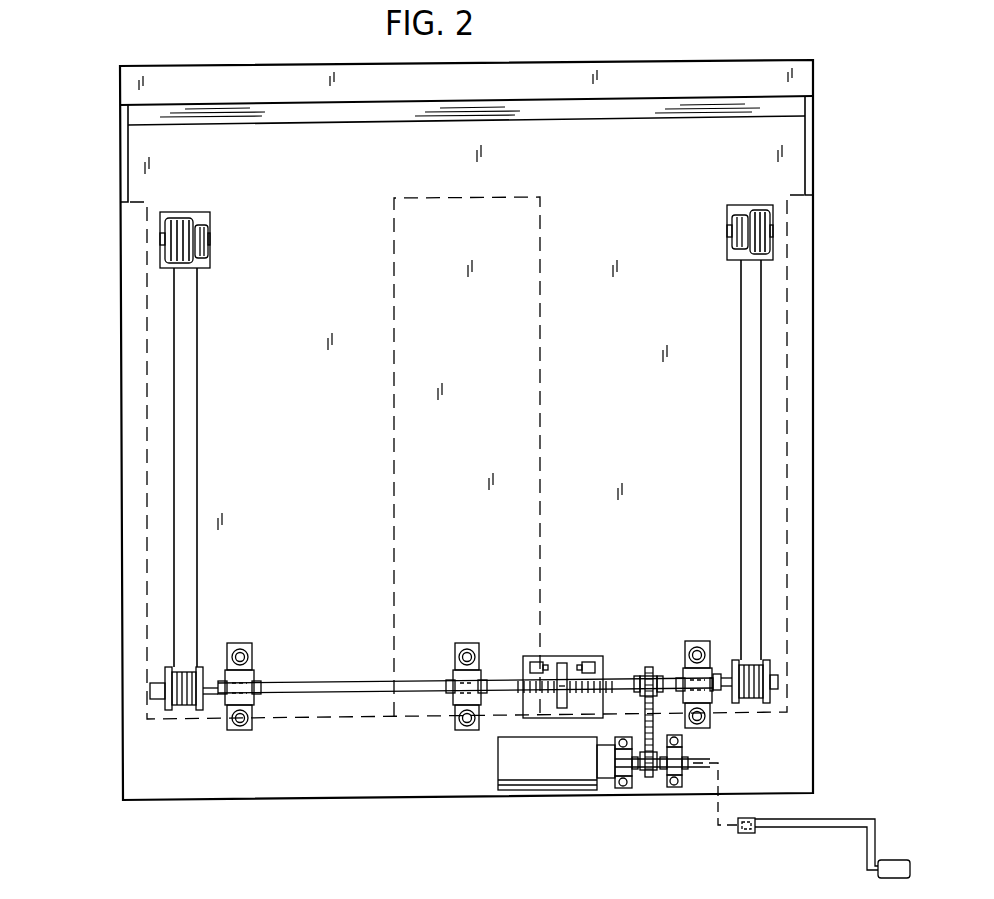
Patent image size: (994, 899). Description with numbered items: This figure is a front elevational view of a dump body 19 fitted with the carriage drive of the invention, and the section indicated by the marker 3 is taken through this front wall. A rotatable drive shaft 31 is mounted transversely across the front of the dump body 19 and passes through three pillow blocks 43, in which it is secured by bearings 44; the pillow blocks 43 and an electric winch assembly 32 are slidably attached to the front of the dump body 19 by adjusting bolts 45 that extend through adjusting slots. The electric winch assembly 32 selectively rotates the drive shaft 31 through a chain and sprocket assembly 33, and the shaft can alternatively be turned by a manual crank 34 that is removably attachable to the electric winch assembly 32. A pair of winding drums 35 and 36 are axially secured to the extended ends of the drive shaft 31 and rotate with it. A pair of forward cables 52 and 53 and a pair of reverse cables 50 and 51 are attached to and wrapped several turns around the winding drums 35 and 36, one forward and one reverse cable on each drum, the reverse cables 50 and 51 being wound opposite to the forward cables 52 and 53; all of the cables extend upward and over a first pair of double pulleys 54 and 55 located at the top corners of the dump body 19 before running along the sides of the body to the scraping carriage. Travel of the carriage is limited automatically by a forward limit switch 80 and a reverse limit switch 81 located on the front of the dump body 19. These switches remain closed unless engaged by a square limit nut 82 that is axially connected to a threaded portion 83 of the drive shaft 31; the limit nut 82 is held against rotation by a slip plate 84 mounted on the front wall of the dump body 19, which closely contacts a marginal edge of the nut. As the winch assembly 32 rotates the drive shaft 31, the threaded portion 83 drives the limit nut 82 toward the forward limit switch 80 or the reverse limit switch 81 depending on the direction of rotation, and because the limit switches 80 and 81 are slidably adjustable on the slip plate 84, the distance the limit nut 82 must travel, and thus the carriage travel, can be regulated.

The dump body 19 is at (120, 330).
The section line of FIG. 3 is at (213, 18).
The drive shaft 31 is at (325, 695).
The electric winch assembly 32 is at (553, 768).
The chain and sprocket assembly 33 is at (644, 797).
The manual crank 34 is at (778, 827).
The winding drum 35 is at (190, 708).
The winding drum 36 is at (745, 704).
The pillow blocks 43 is at (248, 642).
The bearings 44 is at (226, 686).
The adjusting bolts 45 is at (246, 657).
The reverse cable 50 is at (174, 436).
The reverse cable 51 is at (761, 438).
The forward cable 52 is at (197, 437).
The forward cable 53 is at (741, 432).
The double pulley 54 is at (187, 205).
The double pulley 55 is at (745, 195).
The forward limit switch 80 is at (537, 661).
The reverse limit switch 81 is at (590, 661).
The square limit nut 82 is at (562, 662).
The threaded portion 83 is at (500, 681).
The slip plate 84 is at (543, 710).